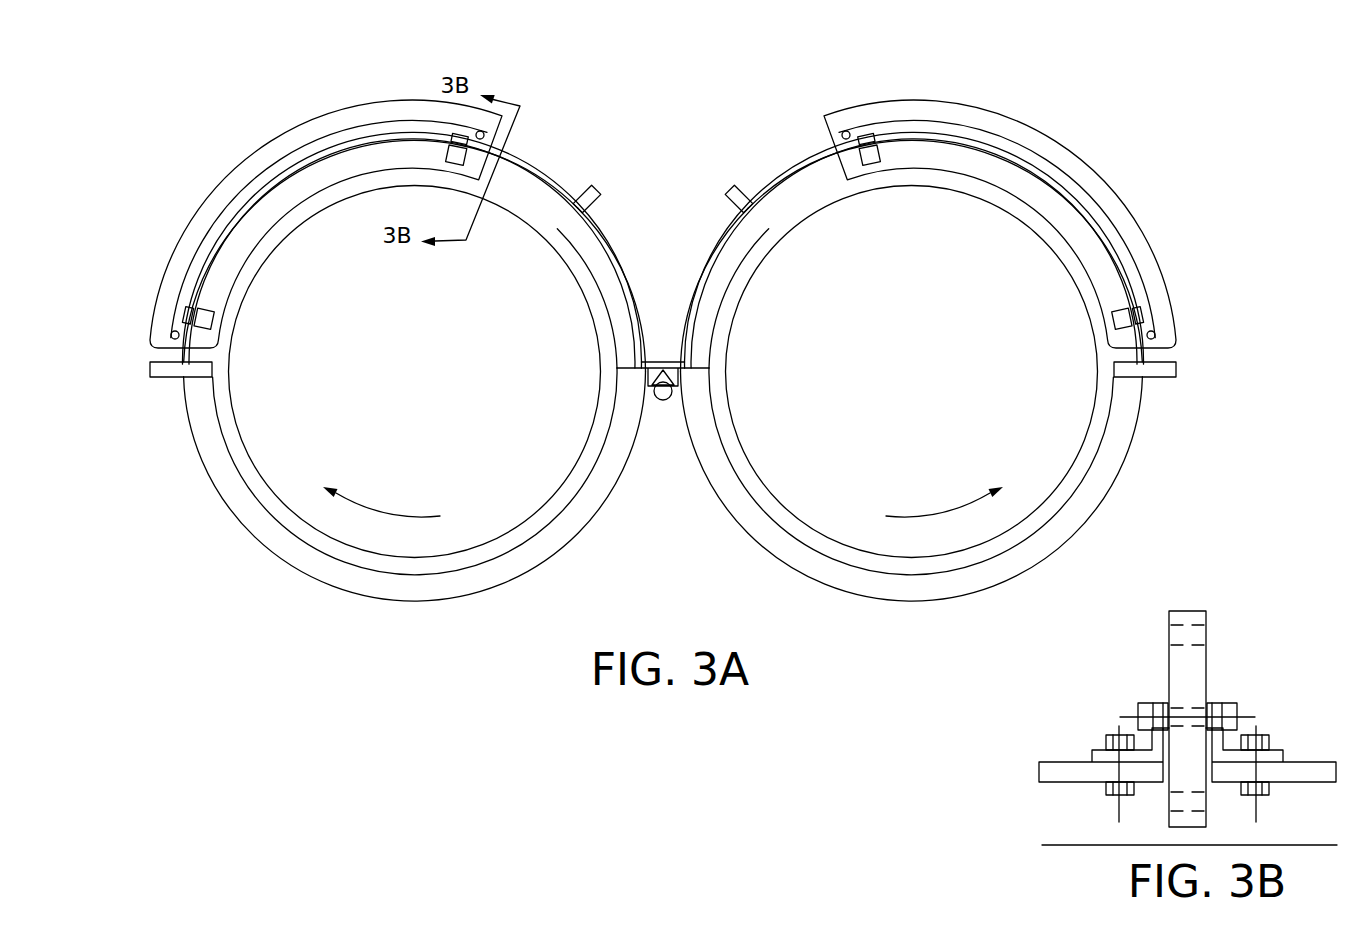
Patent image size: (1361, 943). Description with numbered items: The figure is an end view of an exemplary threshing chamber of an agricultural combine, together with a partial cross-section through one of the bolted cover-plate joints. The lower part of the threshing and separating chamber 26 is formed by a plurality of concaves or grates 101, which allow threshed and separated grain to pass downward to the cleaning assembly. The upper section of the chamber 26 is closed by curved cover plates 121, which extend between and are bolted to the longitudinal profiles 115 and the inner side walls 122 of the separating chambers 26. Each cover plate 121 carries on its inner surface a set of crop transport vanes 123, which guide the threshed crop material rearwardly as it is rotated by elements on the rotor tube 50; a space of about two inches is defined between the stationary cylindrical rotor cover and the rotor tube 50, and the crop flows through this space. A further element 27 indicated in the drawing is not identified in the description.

The threshing and separating chamber 26 is at (660, 225).
The lens 27 is at (538, 513).
The rotor tube 50 is at (664, 386).
The concaves or grates 101 is at (642, 481).
The longitudinal profiles 115 is at (170, 378).
The curved cover plates 121 is at (262, 196).
The inner side walls 122 is at (722, 242).
The crop transport vanes 123 is at (238, 255).